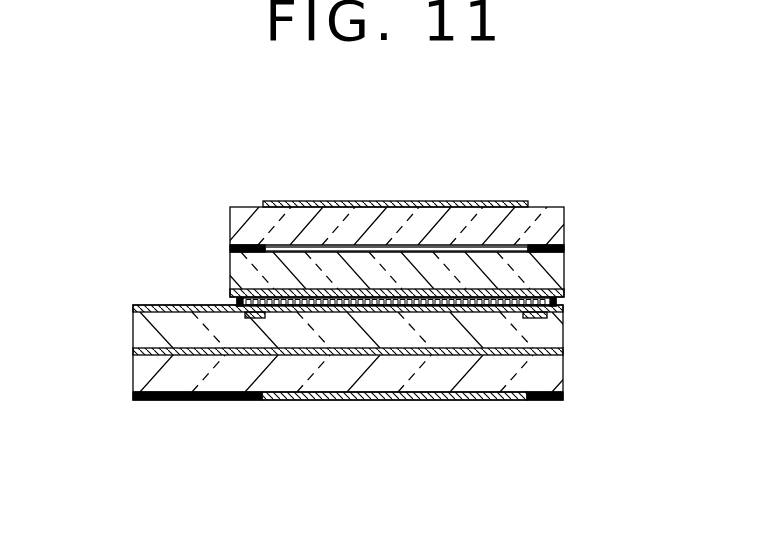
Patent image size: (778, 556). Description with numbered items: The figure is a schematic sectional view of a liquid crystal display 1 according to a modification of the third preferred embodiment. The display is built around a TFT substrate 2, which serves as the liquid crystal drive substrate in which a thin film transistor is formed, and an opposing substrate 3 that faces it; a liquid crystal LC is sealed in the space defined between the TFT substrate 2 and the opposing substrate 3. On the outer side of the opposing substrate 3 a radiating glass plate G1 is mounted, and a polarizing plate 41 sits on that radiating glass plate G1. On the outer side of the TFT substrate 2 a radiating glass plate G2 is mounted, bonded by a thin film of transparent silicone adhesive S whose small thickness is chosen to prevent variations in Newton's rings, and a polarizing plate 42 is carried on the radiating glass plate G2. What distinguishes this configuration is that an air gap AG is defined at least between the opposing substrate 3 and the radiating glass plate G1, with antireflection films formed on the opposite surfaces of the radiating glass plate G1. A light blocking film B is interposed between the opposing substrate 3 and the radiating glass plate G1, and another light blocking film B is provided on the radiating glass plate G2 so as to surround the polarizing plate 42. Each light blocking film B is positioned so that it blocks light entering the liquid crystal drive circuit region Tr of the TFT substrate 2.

The liquid crystal display 1 is at (186, 204).
The polarizing plate 41 is at (530, 205).
The radiating glass plate G1 is at (455, 223).
The air gap AG is at (483, 247).
The light blocking film B is at (246, 245).
The opposing substrate 3 is at (565, 272).
The liquid crystal LC is at (558, 303).
The TFT substrate 2 is at (565, 338).
The liquid crystal drive circuit region Tr is at (257, 318).
The transparent silicone adhesive S is at (565, 358).
The radiating glass plate G2 is at (327, 382).
The polarizing plate 42 is at (457, 400).